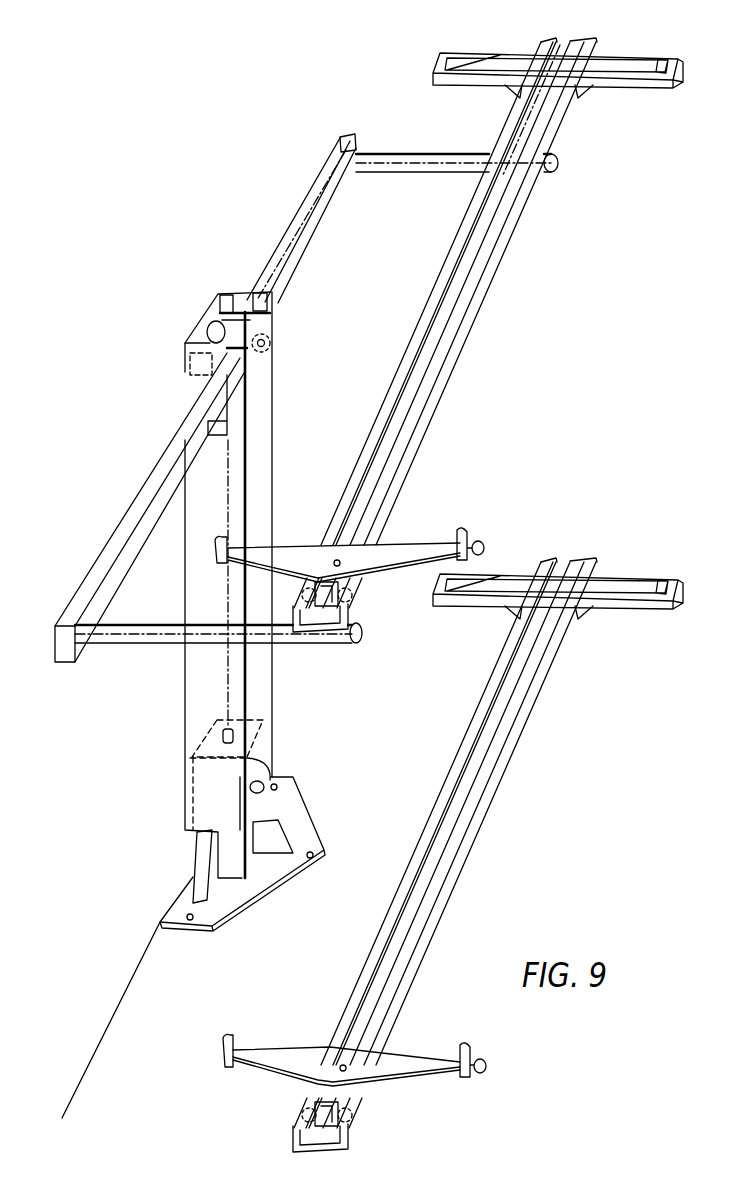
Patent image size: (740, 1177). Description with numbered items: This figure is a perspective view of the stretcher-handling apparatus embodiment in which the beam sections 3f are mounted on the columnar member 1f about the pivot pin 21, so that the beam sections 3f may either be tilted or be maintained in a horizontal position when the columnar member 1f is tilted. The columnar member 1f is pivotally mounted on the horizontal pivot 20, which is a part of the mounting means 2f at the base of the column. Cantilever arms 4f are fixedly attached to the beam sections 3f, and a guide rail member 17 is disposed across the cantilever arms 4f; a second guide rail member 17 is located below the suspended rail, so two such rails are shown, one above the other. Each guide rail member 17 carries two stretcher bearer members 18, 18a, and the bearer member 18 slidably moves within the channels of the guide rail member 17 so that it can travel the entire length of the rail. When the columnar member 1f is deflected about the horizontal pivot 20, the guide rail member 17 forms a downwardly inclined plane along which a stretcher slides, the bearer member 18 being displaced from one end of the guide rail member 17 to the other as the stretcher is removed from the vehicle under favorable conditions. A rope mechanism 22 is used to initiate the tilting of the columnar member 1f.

The columnar member 1f is at (258, 478).
The mounting means 2f is at (268, 872).
The beam sections 3f is at (306, 215).
The cantilever arms 4f is at (396, 158).
The guide rail member 17 is at (496, 323).
The stretcher bearer member 18 is at (403, 557).
The stretcher bearer member 18a is at (652, 72).
The horizontal pivot 20 is at (262, 787).
The pivot pin 21 is at (252, 302).
The rope mechanism 22 is at (527, 138).